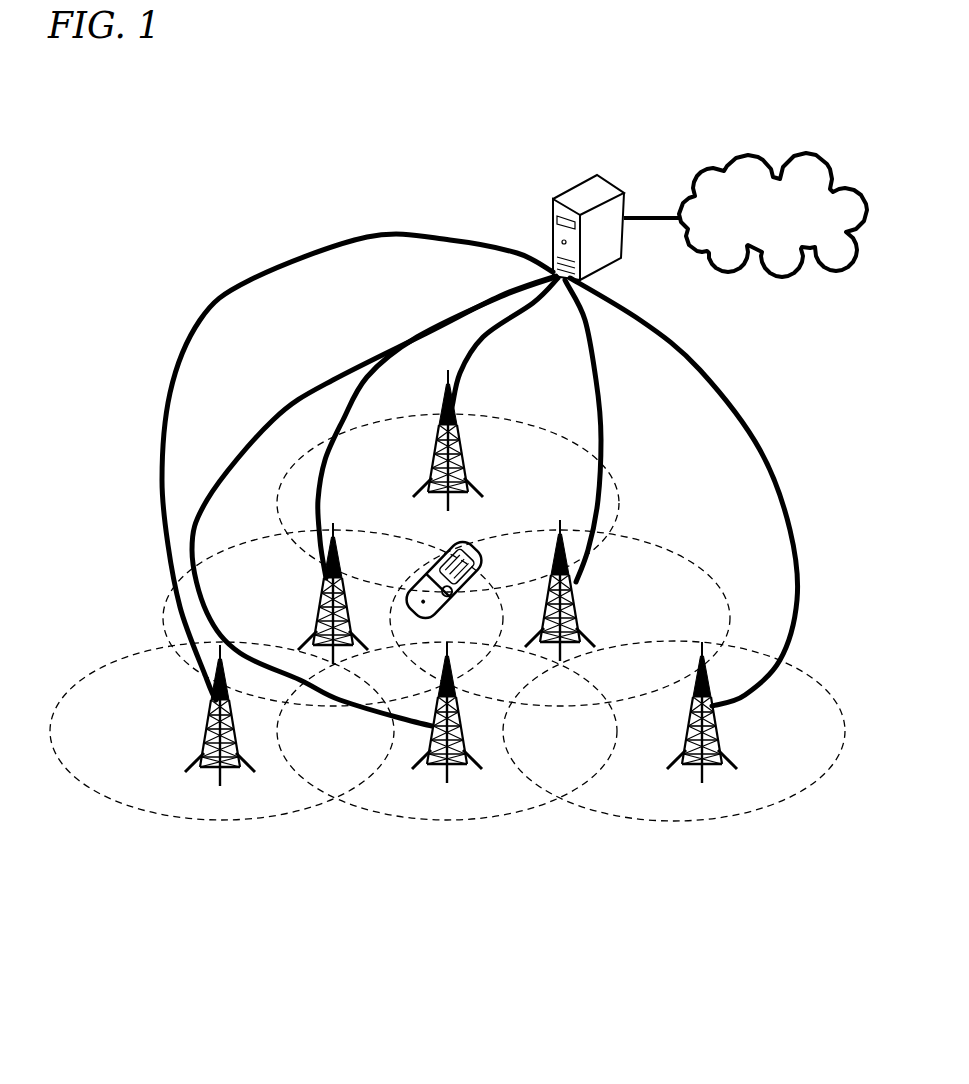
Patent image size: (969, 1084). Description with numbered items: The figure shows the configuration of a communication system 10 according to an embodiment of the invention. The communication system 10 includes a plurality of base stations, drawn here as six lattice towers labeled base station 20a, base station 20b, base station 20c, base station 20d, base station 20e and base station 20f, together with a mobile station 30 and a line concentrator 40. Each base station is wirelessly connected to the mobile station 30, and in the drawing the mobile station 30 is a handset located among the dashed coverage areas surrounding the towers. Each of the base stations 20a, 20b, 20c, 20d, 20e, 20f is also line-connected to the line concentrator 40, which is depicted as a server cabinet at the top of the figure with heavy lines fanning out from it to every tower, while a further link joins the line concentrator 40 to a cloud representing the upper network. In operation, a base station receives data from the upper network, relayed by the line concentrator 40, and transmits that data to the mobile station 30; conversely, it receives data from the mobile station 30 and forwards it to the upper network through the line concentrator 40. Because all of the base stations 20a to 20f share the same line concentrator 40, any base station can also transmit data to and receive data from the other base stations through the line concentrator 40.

The communication system 10 is at (648, 845).
The base station 20a is at (467, 470).
The base station 20b is at (308, 623).
The base station 20c is at (593, 632).
The base station 20d is at (197, 747).
The base station 20e is at (480, 770).
The base station 20f is at (727, 743).
The mobile station 30 is at (447, 557).
The line concentrator 40 is at (561, 202).